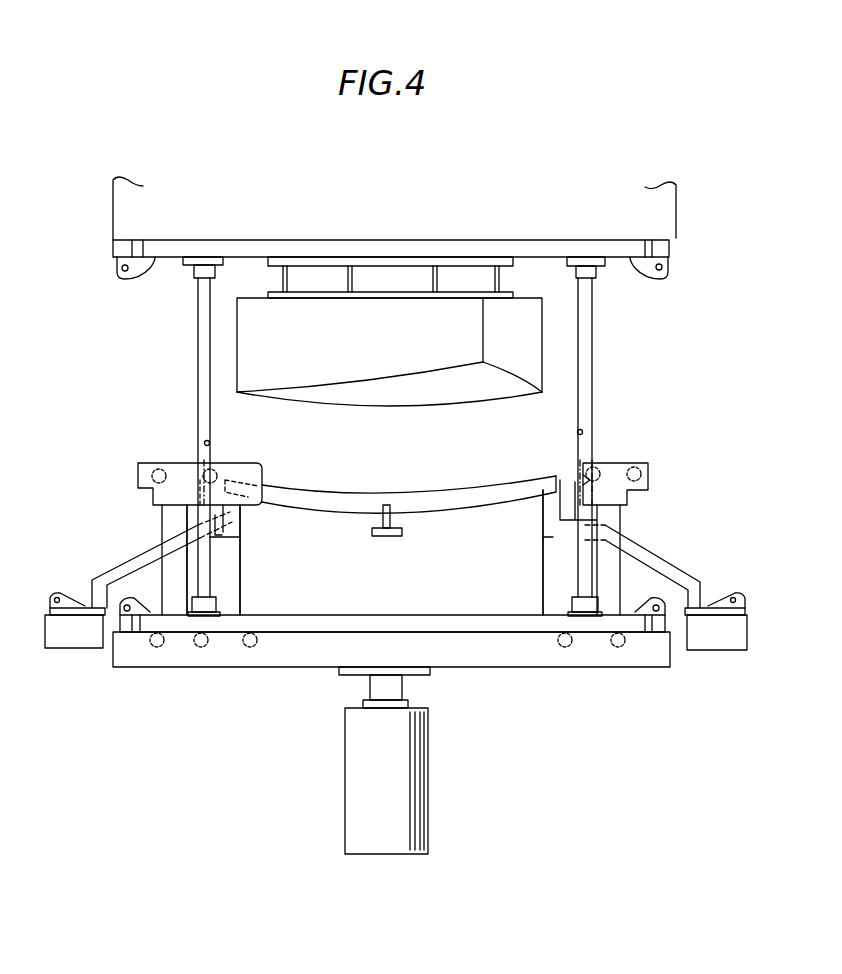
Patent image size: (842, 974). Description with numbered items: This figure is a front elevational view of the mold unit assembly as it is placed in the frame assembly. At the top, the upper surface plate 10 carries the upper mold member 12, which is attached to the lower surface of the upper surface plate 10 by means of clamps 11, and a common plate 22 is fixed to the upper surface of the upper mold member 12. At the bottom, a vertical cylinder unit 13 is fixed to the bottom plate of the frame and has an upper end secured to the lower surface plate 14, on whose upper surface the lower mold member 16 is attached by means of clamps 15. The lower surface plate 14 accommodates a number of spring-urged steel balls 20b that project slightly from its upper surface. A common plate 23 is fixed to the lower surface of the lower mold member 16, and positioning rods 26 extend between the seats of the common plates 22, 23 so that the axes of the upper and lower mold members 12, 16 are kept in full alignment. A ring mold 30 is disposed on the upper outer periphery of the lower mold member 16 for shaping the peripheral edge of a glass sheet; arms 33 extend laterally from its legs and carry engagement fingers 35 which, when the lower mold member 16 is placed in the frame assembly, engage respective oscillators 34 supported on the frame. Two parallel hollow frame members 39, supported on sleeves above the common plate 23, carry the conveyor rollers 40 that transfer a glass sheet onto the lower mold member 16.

The upper surface plate 10 is at (660, 213).
The common plate 22 is at (262, 247).
The clamps 11 is at (140, 268).
The upper mold member 12 is at (388, 312).
The positioning rods 26 is at (200, 348).
The hollow frame members 39 is at (258, 466).
The conveyor rollers 40 is at (160, 468).
The ring mold 30 is at (482, 485).
The lower surface plate 14 is at (278, 655).
The steel balls 20b is at (157, 650).
The common plate 23 is at (228, 625).
The lower mold member 16 is at (322, 605).
The clamps 15 is at (130, 598).
The arms 33 is at (98, 576).
The oscillators 34 is at (78, 642).
The engagement fingers 35 is at (706, 605).
The vertical cylinder unit 13 is at (415, 785).